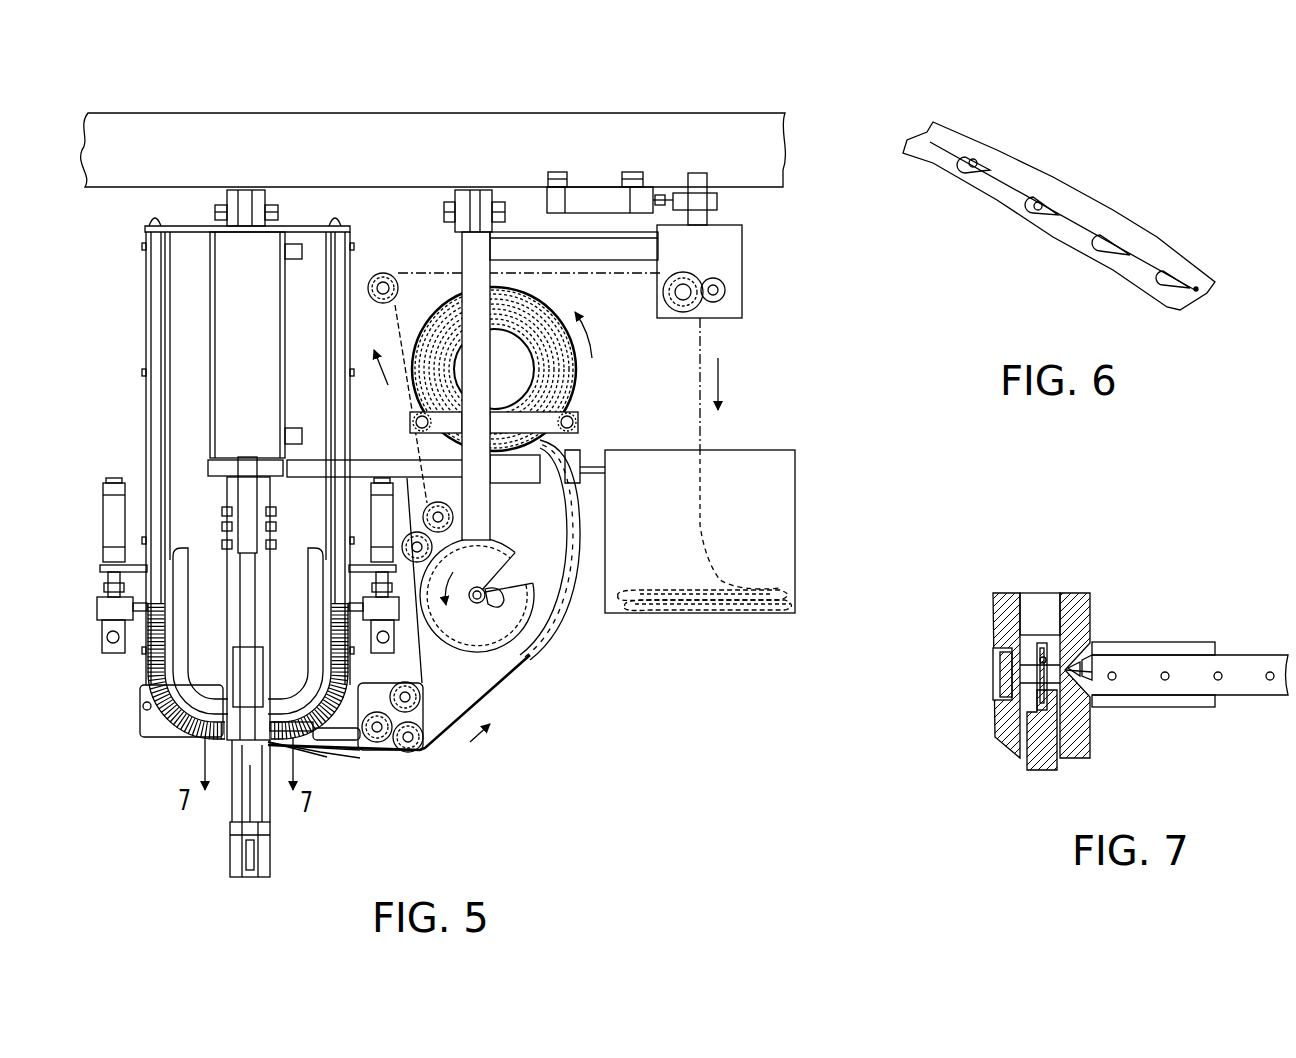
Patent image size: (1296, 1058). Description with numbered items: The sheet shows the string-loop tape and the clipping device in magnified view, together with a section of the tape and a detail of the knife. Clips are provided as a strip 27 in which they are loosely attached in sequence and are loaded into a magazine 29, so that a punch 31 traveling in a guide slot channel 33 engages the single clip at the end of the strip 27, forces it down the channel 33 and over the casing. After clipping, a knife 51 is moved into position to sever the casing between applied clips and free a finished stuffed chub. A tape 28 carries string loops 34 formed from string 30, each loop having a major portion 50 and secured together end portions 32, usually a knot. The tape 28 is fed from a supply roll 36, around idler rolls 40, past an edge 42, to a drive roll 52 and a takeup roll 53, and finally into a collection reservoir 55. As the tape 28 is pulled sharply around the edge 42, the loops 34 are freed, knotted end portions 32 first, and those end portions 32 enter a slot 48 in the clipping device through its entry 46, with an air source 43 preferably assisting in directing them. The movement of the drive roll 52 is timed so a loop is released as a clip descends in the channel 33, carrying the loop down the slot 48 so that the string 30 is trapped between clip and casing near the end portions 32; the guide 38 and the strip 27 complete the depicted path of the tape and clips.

In FIG. 5, the strip 27 is at (167, 718).
In FIG. 5, the tape 28 is at (480, 688).
In FIG. 6, the tape 28 is at (1002, 150).
In FIG. 7, the tape 28 is at (1185, 650).
In FIG. 5, the magazine 29 is at (147, 678).
In FIG. 5, the string 30 is at (508, 673).
In FIG. 6, the string 30 is at (1160, 267).
In FIG. 7, the string 30 is at (1087, 677).
In FIG. 7, the punch 31 is at (1005, 667).
In FIG. 6, the secured together end portions 32 is at (1127, 258).
In FIG. 7, the secured together end portions 32 is at (1073, 693).
In FIG. 7, the guide slot channel 33 is at (1007, 657).
In FIG. 6, the string loop 34 is at (1040, 220).
In FIG. 5, the supply roll 36 is at (573, 378).
In FIG. 5, the strip guide 38 is at (505, 652).
In FIG. 5, the idler rolls 40 is at (385, 750).
In FIG. 5, the edge 42 is at (271, 747).
In FIG. 7, the edge 42 is at (1093, 643).
In FIG. 5, the air source 43 is at (272, 745).
In FIG. 5, the entry 46 is at (268, 743).
In FIG. 7, the entry 46 is at (1077, 667).
In FIG. 7, the slot 48 is at (1070, 670).
In FIG. 6, the major portion 50 is at (993, 173).
In FIG. 5, the knife 51 is at (252, 800).
In FIG. 7, the knife 51 is at (1040, 690).
In FIG. 5, the drive roll 52 is at (507, 592).
In FIG. 5, the takeup roll 53 is at (703, 267).
In FIG. 5, the collection reservoir 55 is at (797, 537).